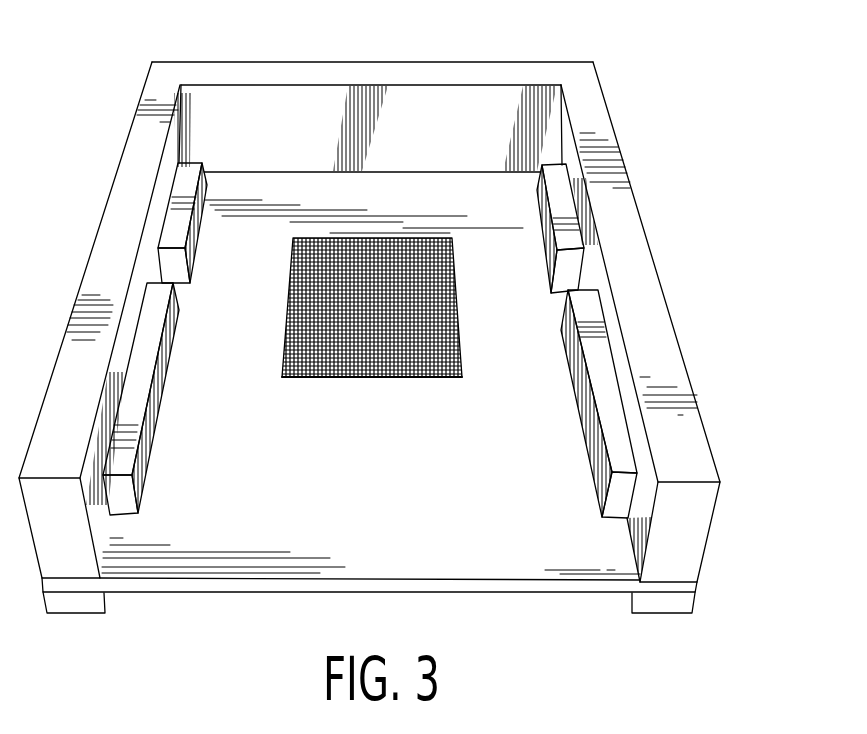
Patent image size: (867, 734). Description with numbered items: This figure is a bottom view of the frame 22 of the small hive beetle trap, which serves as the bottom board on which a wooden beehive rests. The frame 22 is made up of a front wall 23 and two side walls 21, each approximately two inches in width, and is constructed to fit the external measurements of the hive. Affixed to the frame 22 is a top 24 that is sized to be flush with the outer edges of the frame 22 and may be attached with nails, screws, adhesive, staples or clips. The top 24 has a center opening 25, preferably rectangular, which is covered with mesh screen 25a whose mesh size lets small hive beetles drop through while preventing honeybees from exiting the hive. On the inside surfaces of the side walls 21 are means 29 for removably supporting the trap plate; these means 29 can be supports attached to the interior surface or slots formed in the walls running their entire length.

The side wall 21 is at (630, 390).
The frame 22 is at (673, 604).
The front wall 23 is at (428, 100).
The top 24 is at (250, 517).
The center opening 25 is at (425, 378).
The mesh screen 25a is at (322, 378).
The means for removably supporting trap plate 29 is at (583, 433).